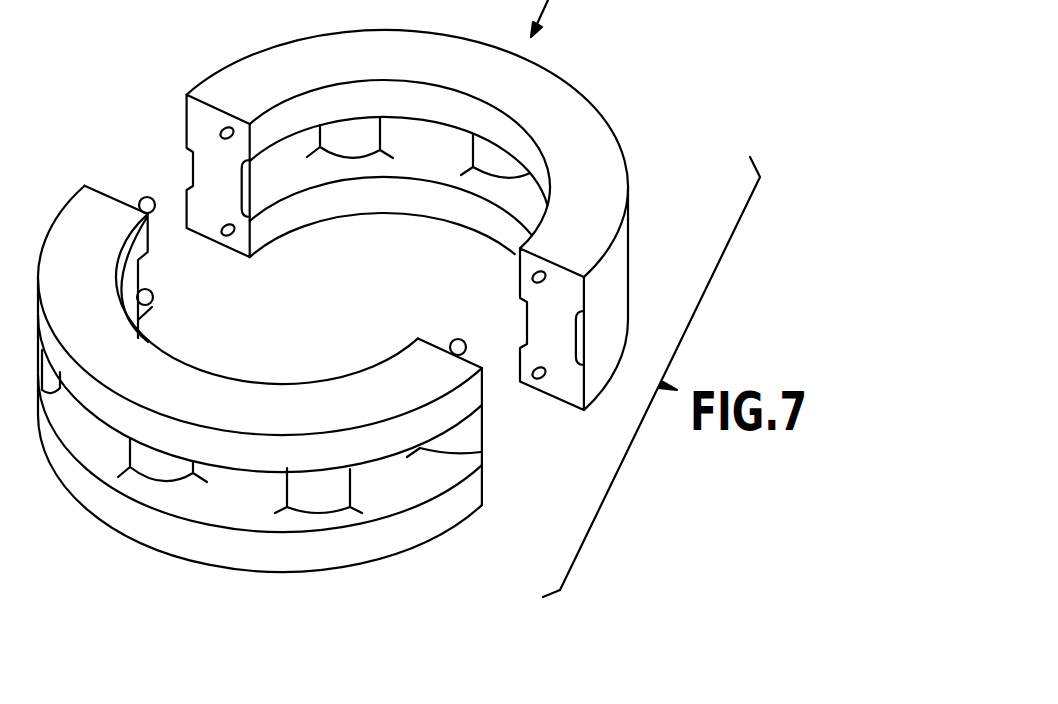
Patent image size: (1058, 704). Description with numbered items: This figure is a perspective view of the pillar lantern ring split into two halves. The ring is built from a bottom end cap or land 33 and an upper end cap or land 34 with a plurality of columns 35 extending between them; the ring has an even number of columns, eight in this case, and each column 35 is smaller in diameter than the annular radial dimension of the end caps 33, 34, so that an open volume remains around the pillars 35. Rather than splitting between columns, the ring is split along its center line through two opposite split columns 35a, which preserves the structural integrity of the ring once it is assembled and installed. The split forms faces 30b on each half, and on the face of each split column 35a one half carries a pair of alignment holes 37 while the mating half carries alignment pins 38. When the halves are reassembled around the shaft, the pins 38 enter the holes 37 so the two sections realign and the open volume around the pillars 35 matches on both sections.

The face 30b is at (195, 143).
The bottom end cap or land 33 is at (402, 528).
The upper end cap or land 34 is at (597, 160).
The column 35 is at (135, 456).
The split column 35a is at (192, 172).
The alignment hole 37 is at (233, 128).
The alignment pin 38 is at (144, 198).